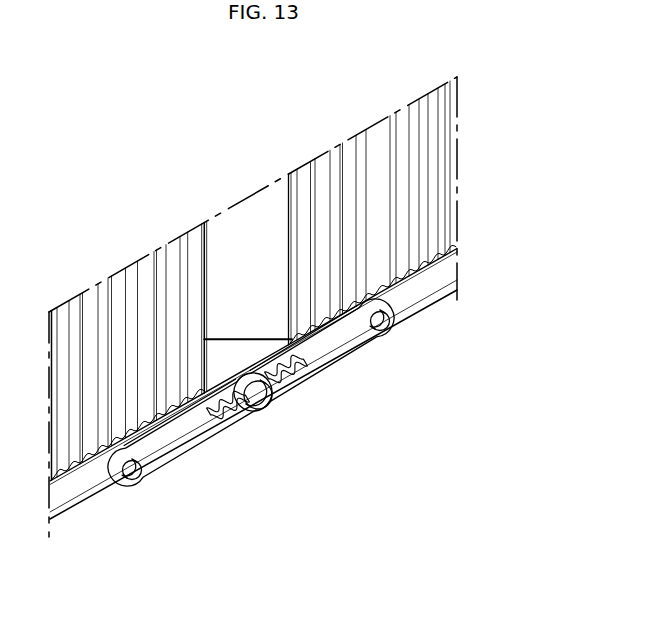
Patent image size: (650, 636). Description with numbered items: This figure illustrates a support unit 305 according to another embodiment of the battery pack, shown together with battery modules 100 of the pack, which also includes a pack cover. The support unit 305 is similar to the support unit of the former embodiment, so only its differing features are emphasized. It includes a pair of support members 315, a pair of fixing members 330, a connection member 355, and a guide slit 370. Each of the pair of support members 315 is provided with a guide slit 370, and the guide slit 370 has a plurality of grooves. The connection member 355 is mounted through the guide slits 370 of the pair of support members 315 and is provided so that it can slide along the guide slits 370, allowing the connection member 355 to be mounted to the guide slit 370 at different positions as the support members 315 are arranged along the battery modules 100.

The battery module 100 is at (90, 510).
The support unit 305 is at (265, 410).
The support member 315 is at (183, 442).
The fixing member 330 is at (138, 473).
The connection member 355 is at (260, 400).
The guide slit 370 is at (223, 417).